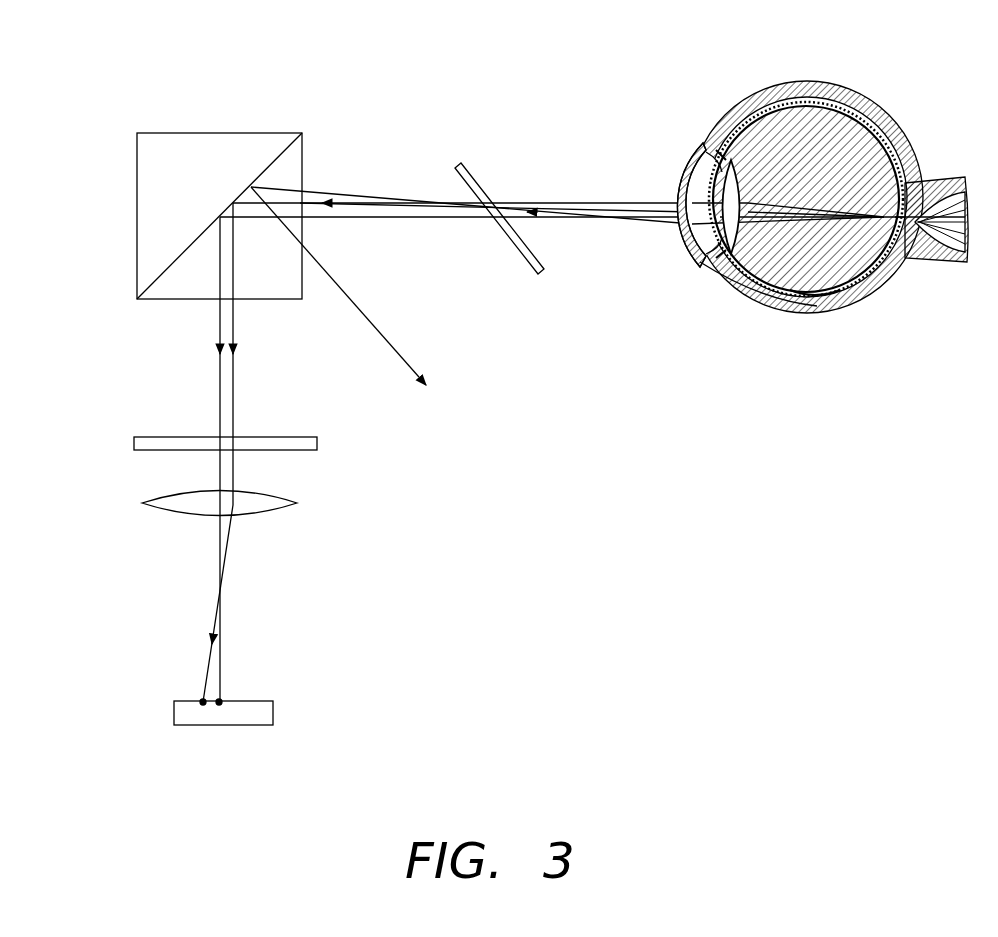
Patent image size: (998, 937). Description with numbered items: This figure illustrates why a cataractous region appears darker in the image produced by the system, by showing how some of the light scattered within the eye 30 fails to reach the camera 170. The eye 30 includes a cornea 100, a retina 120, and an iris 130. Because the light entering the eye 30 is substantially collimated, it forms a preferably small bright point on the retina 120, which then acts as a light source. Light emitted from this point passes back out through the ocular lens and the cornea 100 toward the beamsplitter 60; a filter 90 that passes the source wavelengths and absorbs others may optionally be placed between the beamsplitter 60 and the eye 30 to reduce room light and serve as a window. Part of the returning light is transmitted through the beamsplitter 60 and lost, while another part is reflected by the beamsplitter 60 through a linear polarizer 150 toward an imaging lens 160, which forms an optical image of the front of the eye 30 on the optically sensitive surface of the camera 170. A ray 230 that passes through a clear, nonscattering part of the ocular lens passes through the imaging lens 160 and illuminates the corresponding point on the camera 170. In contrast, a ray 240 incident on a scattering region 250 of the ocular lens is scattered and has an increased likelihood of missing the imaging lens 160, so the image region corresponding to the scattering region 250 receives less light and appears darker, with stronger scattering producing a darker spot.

The eye 30 is at (795, 184).
The beamsplitter 60 is at (222, 133).
The filter 90 is at (498, 180).
The cornea 100 is at (680, 186).
The retina 120 is at (886, 150).
The iris 130 is at (718, 250).
The linear polarizer 150 is at (318, 443).
The imaging lens 160 is at (173, 513).
The camera 170 is at (197, 726).
The ray 230 is at (532, 200).
The ray 240 is at (395, 348).
The scattering region 250 is at (818, 307).